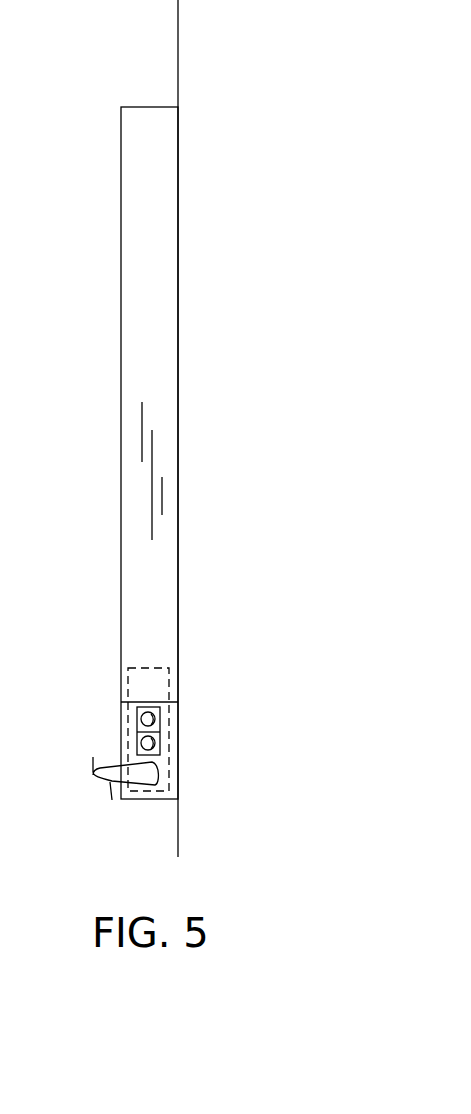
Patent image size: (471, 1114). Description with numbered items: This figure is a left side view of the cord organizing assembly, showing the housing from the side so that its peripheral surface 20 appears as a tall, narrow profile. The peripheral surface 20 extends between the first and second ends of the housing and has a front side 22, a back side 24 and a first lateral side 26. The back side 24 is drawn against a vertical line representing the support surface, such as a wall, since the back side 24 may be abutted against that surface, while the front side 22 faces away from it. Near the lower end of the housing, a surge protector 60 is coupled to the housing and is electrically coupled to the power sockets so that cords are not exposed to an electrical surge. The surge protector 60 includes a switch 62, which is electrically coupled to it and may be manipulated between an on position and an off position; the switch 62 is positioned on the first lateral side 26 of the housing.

The peripheral surface 20 is at (178, 80).
The front side 22 is at (121, 271).
The back side 24 is at (178, 174).
The first lateral side 26 is at (138, 427).
The surge protector 60 is at (148, 667).
The switch 62 is at (145, 718).